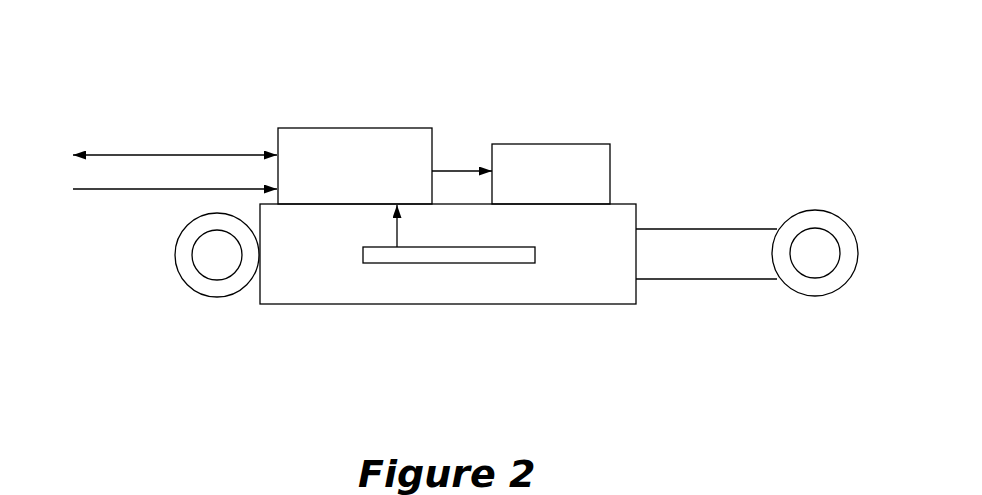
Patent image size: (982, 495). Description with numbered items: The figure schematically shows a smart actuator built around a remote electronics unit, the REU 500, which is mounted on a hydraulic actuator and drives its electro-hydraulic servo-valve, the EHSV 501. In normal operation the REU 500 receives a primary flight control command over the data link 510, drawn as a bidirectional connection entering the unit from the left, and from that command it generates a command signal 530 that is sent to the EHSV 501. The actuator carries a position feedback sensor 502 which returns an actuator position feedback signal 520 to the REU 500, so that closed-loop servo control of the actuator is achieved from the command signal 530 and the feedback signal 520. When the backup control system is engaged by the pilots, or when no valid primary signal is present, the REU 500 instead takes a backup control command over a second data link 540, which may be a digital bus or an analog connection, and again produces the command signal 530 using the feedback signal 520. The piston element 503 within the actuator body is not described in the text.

The remote electronics unit (REU) 500 is at (380, 117).
The electro-hydraulic servo-valve (EHSV) 501 is at (570, 145).
The position feedback sensor 502 is at (570, 305).
The actuator piston 503 is at (433, 265).
The data link 510 is at (175, 137).
The actuator position feedback signal 520 is at (385, 237).
The command signal 530 is at (465, 153).
The data link 540 is at (108, 207).